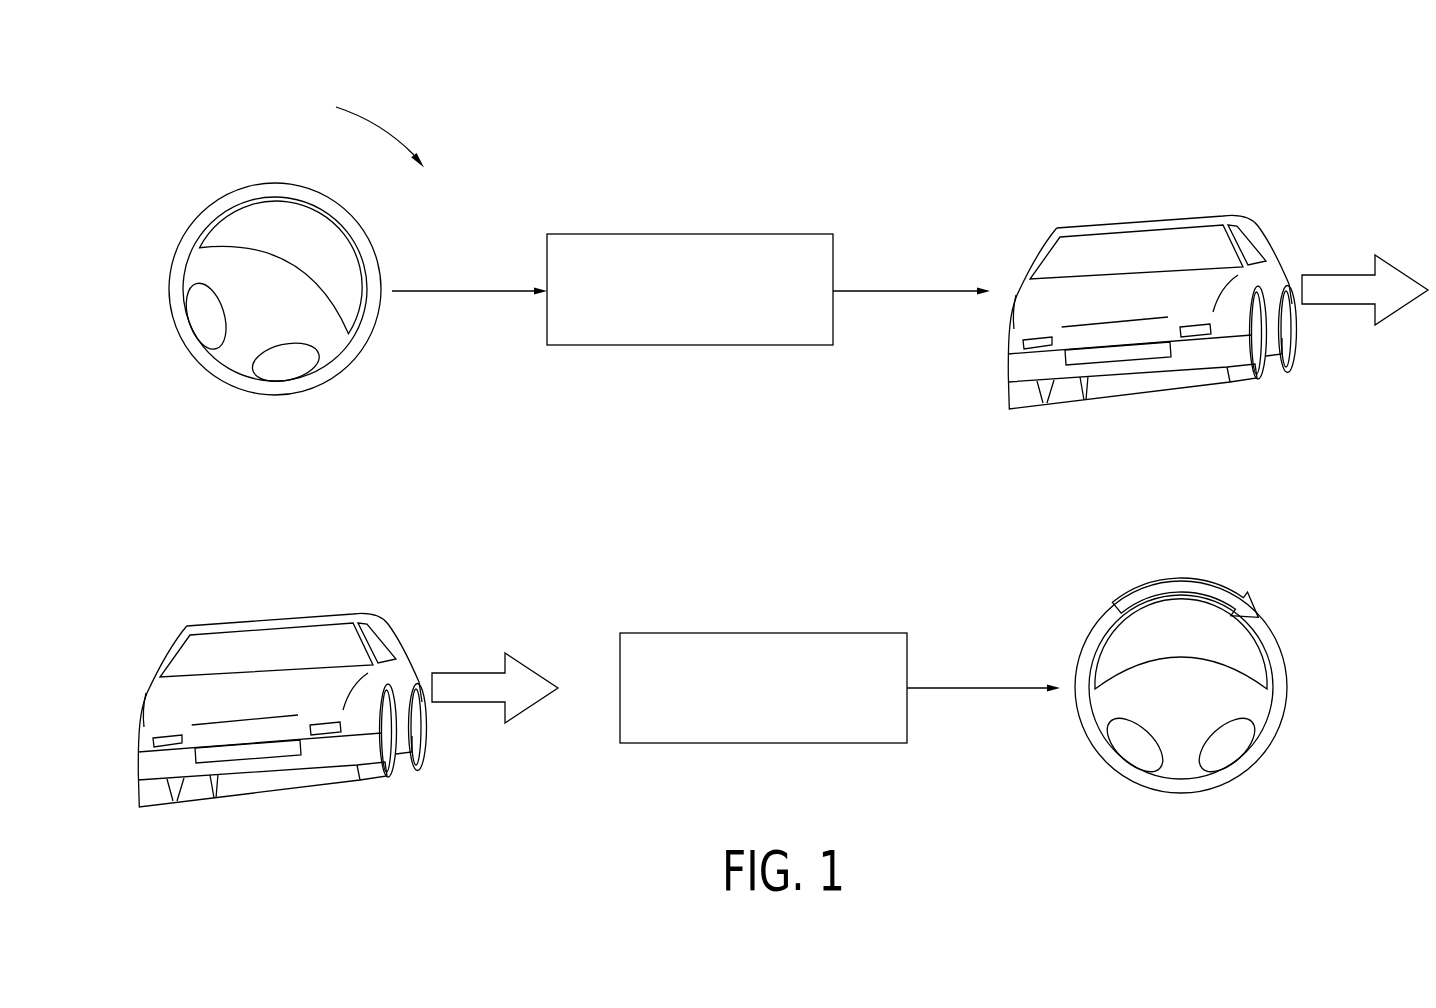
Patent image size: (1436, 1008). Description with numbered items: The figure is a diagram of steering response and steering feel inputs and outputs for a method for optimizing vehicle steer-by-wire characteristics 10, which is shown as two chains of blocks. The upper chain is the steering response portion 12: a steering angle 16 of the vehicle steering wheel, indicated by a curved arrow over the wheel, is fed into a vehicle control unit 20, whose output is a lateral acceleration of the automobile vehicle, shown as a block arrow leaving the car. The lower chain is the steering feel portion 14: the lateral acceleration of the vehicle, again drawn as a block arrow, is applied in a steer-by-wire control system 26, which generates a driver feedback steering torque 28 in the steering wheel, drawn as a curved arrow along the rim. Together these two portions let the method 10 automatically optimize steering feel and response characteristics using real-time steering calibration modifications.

The method for optimizing vehicle steer-by-wire characteristics 10 is at (1075, 110).
The steering response portion 12 is at (918, 228).
The steering feel portion 14 is at (935, 601).
The steering angle 16 is at (373, 124).
The vehicle control unit 20 is at (675, 301).
The steer-by-wire control system 26 is at (779, 701).
The driver feedback steering torque 28 is at (1177, 583).